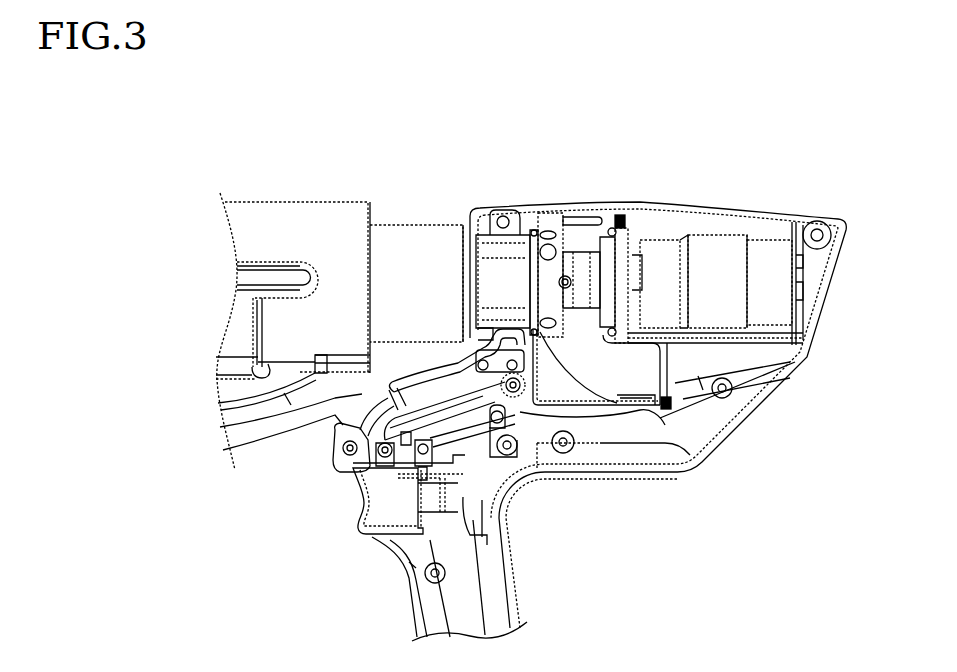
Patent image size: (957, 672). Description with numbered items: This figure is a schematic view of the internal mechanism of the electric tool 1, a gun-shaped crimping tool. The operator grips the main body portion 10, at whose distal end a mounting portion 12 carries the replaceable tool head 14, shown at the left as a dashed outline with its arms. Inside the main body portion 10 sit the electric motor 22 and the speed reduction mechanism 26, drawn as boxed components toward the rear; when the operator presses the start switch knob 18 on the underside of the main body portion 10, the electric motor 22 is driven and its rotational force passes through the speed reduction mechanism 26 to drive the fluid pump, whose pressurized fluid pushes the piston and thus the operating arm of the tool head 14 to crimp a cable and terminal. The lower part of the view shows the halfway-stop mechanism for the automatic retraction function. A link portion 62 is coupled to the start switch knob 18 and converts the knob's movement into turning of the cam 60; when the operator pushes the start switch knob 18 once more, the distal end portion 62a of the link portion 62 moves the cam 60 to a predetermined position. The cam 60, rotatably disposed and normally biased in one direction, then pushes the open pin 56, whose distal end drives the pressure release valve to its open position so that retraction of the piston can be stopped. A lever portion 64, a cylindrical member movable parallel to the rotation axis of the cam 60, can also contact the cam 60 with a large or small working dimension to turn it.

The electric tool 1 is at (554, 375).
The main body portion 10 is at (580, 197).
The mounting portion 12 is at (398, 238).
The tool head 14 is at (287, 220).
The start switch knob 18 is at (377, 500).
The electric motor 22 is at (735, 225).
The speed reduction mechanism 26 is at (656, 224).
The open pin 56 is at (657, 398).
The cam 60 is at (577, 412).
The link portion 62 is at (462, 440).
The distal end portion of the link portion 62a is at (522, 405).
The lever portion 64 is at (540, 410).